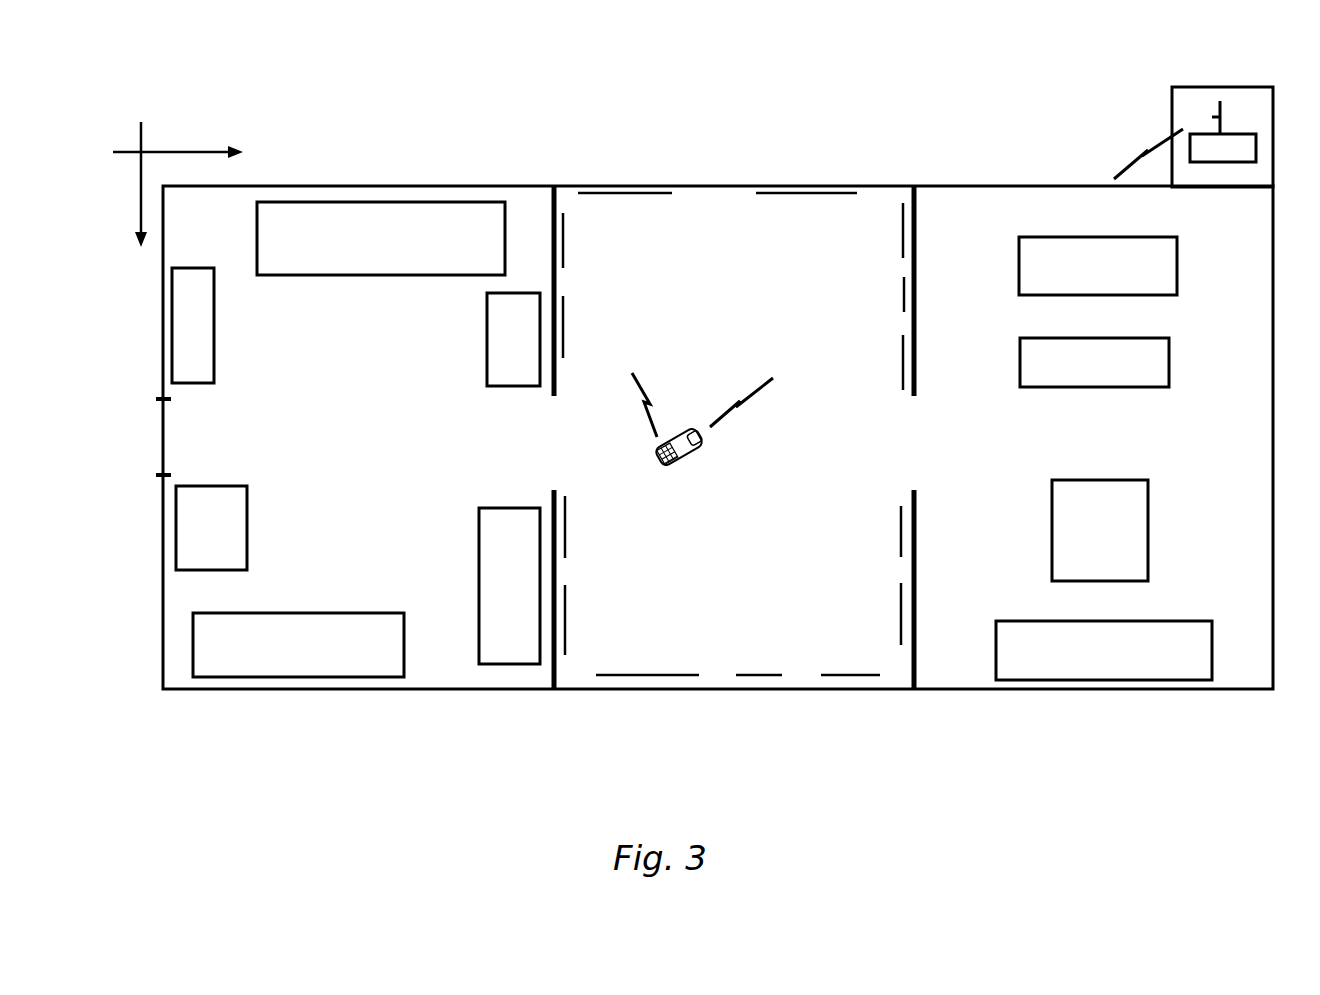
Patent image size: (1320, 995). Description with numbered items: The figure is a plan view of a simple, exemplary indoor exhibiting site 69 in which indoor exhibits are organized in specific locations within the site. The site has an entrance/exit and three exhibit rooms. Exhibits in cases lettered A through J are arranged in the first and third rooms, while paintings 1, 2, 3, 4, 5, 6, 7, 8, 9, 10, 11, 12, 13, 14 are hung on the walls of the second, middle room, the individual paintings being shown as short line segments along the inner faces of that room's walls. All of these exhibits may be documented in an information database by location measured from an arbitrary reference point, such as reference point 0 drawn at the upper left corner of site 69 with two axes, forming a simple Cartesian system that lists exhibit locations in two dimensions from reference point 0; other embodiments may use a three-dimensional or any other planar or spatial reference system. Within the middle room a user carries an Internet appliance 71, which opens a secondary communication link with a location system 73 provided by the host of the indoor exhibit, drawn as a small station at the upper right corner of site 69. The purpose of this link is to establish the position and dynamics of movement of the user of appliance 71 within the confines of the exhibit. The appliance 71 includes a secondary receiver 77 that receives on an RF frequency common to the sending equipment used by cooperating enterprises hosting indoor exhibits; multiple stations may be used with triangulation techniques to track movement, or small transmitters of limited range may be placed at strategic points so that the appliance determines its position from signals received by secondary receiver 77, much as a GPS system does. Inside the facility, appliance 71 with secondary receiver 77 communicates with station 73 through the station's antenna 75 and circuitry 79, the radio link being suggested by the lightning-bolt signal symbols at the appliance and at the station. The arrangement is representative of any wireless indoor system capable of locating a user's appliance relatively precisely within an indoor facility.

The reference point 0 is at (178, 182).
The painting 1 is at (575, 327).
The painting 2 is at (574, 240).
The painting 3 is at (625, 210).
The painting 4 is at (806, 210).
The painting 5 is at (891, 230).
The painting 6 is at (890, 294).
The painting 7 is at (891, 362).
The painting 8 is at (887, 531).
The painting 9 is at (887, 614).
The painting 10 is at (850, 653).
The painting 11 is at (760, 654).
The painting 12 is at (647, 654).
The painting 13 is at (585, 620).
The painting 14 is at (585, 527).
The indoor exhibiting site 69 is at (540, 125).
The Internet appliance 71 is at (665, 412).
The location system 73 is at (1215, 121).
The antenna 75 is at (1212, 117).
The secondary receiver 77 is at (692, 455).
The circuitry 79 is at (1256, 148).